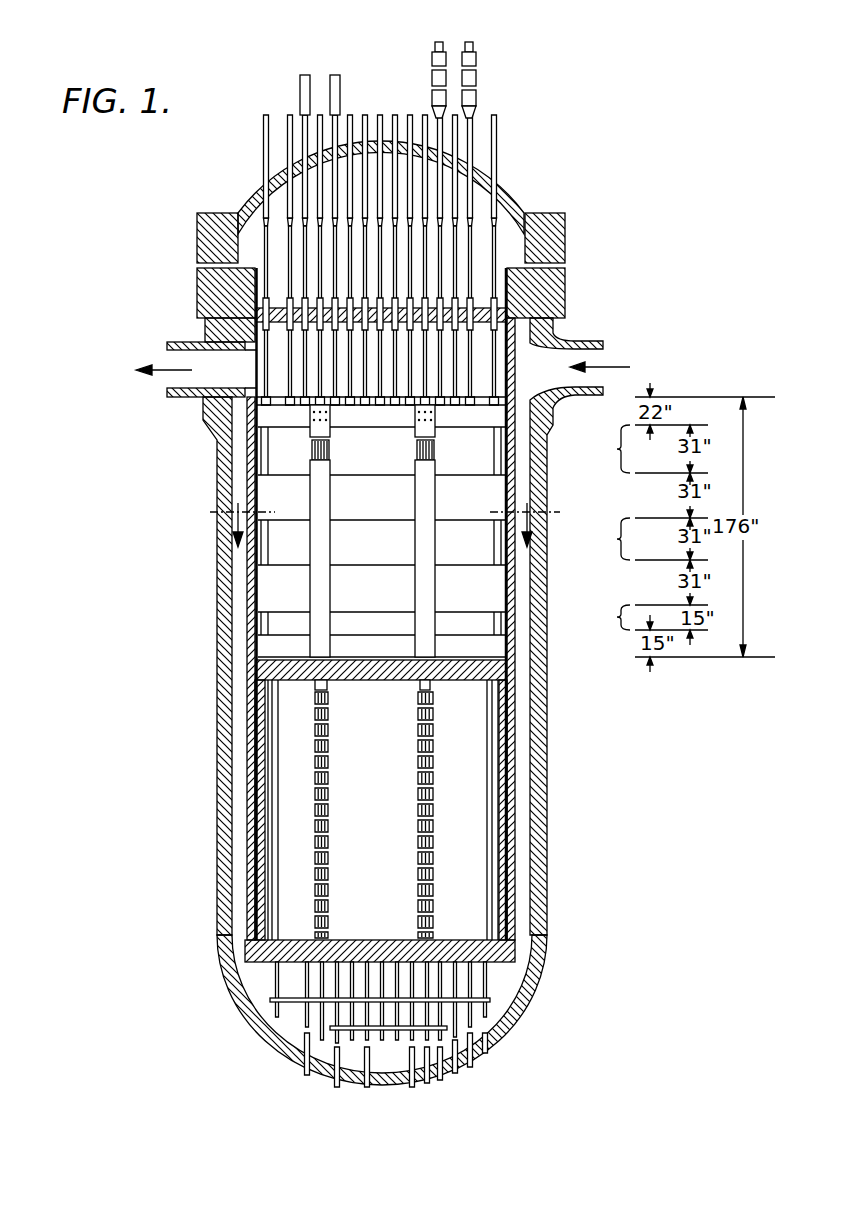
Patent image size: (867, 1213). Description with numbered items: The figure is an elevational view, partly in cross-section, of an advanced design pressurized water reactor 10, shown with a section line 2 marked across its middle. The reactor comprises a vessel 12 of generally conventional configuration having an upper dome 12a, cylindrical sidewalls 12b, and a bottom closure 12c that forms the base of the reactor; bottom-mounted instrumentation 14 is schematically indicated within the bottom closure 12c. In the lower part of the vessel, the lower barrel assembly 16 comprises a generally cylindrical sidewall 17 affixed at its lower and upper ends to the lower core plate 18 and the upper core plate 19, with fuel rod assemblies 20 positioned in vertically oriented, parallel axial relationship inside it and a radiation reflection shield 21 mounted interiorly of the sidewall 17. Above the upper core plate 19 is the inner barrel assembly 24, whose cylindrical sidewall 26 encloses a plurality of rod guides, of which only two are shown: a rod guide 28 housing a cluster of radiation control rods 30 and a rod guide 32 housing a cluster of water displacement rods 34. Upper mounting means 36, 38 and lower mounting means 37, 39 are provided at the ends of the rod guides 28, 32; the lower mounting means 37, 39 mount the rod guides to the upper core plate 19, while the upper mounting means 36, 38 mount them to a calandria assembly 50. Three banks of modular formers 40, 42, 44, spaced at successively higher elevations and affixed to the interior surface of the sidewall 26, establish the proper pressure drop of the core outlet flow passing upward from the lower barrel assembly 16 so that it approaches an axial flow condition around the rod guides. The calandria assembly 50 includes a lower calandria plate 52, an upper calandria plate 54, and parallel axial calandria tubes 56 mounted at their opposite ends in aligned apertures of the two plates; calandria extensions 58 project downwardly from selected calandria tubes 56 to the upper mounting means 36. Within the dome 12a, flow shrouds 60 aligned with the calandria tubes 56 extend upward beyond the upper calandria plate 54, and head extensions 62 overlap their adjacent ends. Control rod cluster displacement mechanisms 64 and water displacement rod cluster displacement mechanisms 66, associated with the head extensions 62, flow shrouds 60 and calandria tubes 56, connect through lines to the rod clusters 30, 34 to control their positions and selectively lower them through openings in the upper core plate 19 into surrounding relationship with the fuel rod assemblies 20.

The section line 2- 2 is at (380, 525).
The pressurized water reactor 10 is at (620, 211).
The vessel 12 is at (579, 320).
The upper dome 12a is at (506, 196).
The cylindrical sidewalls 12b is at (545, 470).
The bottom closure 12c is at (518, 1000).
The bottom-mounted instrumentation 14 is at (458, 1026).
The lower barrel assembly 16 is at (238, 734).
The cylindrical sidewall 17 is at (240, 773).
The lower core plate 18 is at (243, 953).
The upper core plate 19 is at (255, 672).
The fuel rod assemblies 20 is at (416, 841).
The radiation reflection shield 21 is at (260, 820).
The inner barrel assembly 24 is at (250, 626).
The cylindrical sidewall 26 is at (248, 580).
The rod guide 28 is at (331, 503).
The cluster of radiation control rods 30 is at (331, 450).
The rod guide 32 is at (436, 503).
The cluster of water displacement rods 34 is at (436, 446).
The upper mounting means 36 is at (331, 408).
The lower mounting means 37 is at (258, 650).
The upper mounting means 38 is at (436, 408).
The lower mounting means 39 is at (452, 682).
The bank of modular formers 40 is at (500, 628).
The bank of modular formers 42 is at (498, 548).
The bank of modular formers 44 is at (514, 442).
The calandria assembly 50 is at (232, 332).
The lower calandria plate 52 is at (283, 410).
The upper calandria plate 54 is at (246, 322).
The calandria tubes 56 is at (262, 362).
The calandria extensions 58 is at (272, 400).
The flow shrouds 60 is at (478, 262).
The head extensions 62 is at (495, 150).
The control rod cluster displacement mechanisms 64 is at (469, 42).
The water displacement rod cluster displacement mechanisms 66 is at (336, 78).